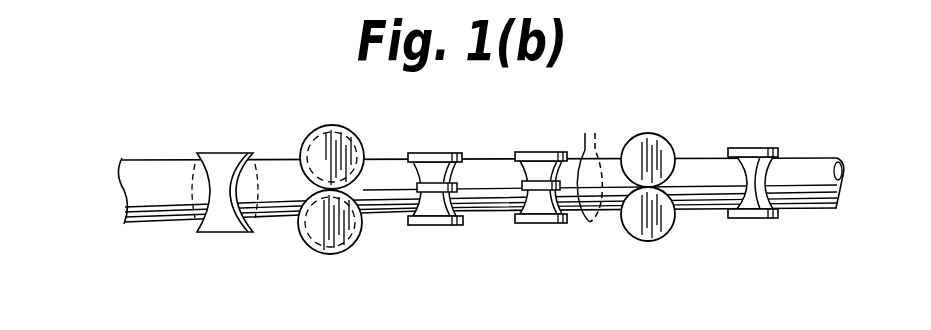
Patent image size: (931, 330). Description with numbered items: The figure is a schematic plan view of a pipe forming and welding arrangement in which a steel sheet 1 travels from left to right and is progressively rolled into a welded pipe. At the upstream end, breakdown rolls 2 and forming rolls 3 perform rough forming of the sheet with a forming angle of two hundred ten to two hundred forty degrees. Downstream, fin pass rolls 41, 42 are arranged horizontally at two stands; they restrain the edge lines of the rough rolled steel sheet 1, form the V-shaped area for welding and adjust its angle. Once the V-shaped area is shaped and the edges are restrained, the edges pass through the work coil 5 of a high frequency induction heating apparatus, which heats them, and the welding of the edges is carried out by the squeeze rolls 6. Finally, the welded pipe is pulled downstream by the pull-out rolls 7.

The steel sheet 1 is at (158, 167).
The breakdown rolls 2 is at (222, 155).
The forming rolls 3 is at (348, 138).
The fin pass roll 41 is at (437, 153).
The fin pass roll 42 is at (538, 152).
The work coil 5 is at (588, 223).
The squeeze rolls 6 is at (662, 135).
The pull-out rolls 7 is at (755, 150).